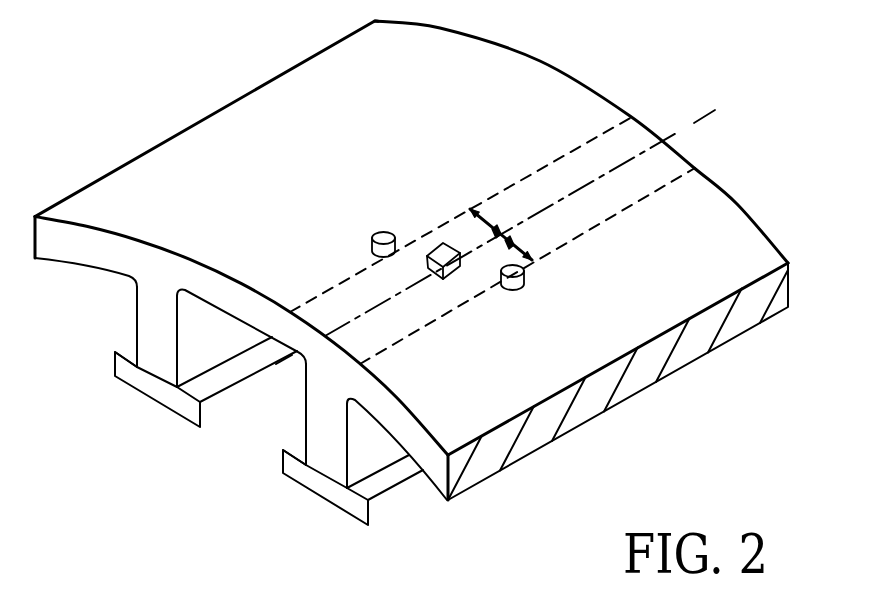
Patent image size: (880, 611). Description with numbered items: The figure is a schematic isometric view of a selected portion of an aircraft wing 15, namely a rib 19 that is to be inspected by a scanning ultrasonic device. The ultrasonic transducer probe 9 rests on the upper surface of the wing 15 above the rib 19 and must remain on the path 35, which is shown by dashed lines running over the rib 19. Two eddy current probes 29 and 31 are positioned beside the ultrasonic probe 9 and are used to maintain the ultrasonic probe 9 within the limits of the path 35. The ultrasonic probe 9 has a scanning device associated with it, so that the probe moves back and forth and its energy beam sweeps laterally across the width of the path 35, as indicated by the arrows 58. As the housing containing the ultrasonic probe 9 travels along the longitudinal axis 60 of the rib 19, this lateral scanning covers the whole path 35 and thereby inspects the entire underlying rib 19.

The ultrasonic transducer probe 9 is at (446, 274).
The aircraft wing 15 is at (720, 250).
The rib 19 is at (346, 438).
The eddy current probe 29 is at (377, 232).
The eddy current probe 31 is at (519, 267).
The path 35 is at (518, 172).
The arrows 58 is at (480, 228).
The longitudinal axis 60 is at (694, 123).